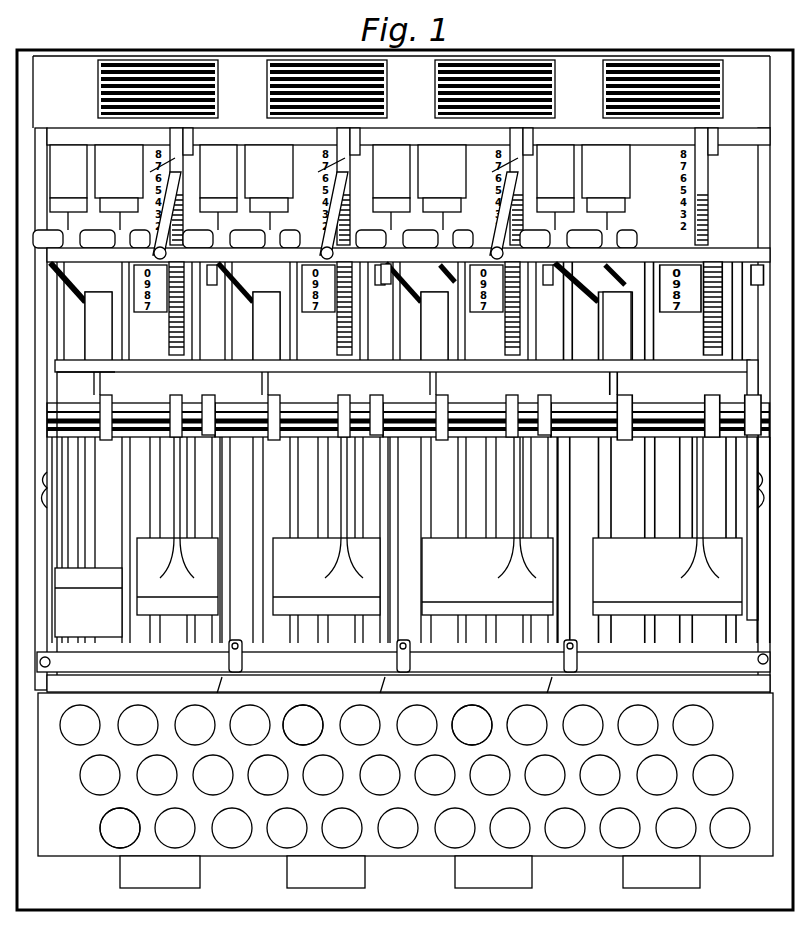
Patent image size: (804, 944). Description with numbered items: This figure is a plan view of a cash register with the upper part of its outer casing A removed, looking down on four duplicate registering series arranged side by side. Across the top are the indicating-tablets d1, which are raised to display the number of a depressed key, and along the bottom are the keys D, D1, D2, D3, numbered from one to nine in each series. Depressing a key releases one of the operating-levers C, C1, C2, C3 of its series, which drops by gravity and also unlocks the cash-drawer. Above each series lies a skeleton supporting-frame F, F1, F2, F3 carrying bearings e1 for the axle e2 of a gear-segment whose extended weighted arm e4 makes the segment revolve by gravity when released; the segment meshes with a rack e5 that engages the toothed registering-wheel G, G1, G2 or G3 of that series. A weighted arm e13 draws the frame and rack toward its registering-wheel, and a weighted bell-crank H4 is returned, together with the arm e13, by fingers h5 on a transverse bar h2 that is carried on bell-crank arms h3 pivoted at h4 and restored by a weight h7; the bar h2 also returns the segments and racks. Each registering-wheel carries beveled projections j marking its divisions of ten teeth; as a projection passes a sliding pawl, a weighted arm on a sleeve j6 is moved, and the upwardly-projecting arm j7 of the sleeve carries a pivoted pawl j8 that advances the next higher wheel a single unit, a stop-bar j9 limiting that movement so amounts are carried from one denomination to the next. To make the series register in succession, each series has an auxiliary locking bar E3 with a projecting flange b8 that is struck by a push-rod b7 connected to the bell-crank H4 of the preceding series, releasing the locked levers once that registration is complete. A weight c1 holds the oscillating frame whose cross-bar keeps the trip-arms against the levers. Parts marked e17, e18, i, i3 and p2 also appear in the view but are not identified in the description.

The outer casing A is at (405, 482).
The indicating-tablet d1 is at (732, 88).
The sleeve j6 is at (408, 136).
The upwardly-projecting arm j7 is at (555, 118).
The pivoted pawl j8 is at (356, 161).
The weighted bell-crank H4 is at (335, 196).
The weighted arm or lever e13 is at (620, 252).
The registering-wheel G3 is at (160, 215).
The registering-wheel G2 is at (326, 215).
The registering-wheel G1 is at (495, 215).
The registering-wheel G is at (686, 186).
The projections j is at (662, 300).
The bearings e1 is at (78, 285).
The stop-bar j9 is at (403, 266).
The brace e17 is at (451, 265).
The brace e18 is at (611, 266).
The projecting fingers h5 is at (358, 331).
The rack e5 is at (780, 285).
The transverse rod or bar h2 is at (752, 345).
The bell-crank arms h3 is at (780, 395).
The pivot h4 is at (404, 500).
The shaft F3 is at (108, 398).
The shaft F2 is at (272, 398).
The shaft F' F1 is at (445, 398).
The skeleton supporting-frame F is at (612, 398).
The operating-levers C3 is at (137, 519).
The operating-levers C2 is at (305, 519).
The operating-levers C1 is at (473, 519).
The operating-levers C is at (663, 519).
The bearing i is at (408, 424).
The arm i3 is at (429, 426).
The axle e2 is at (394, 424).
The weighted arm e4 is at (439, 526).
The weight h7 is at (88, 602).
The bar p2 is at (592, 663).
The push-rod b7 is at (565, 645).
The auxiliary locking bar or frame E3 is at (408, 683).
The projecting arm or flange b8 is at (384, 696).
The keys D is at (713, 725).
The keys D2 is at (310, 730).
The keys D1 is at (477, 730).
The keys D3 is at (92, 792).
The weight c1 is at (410, 872).